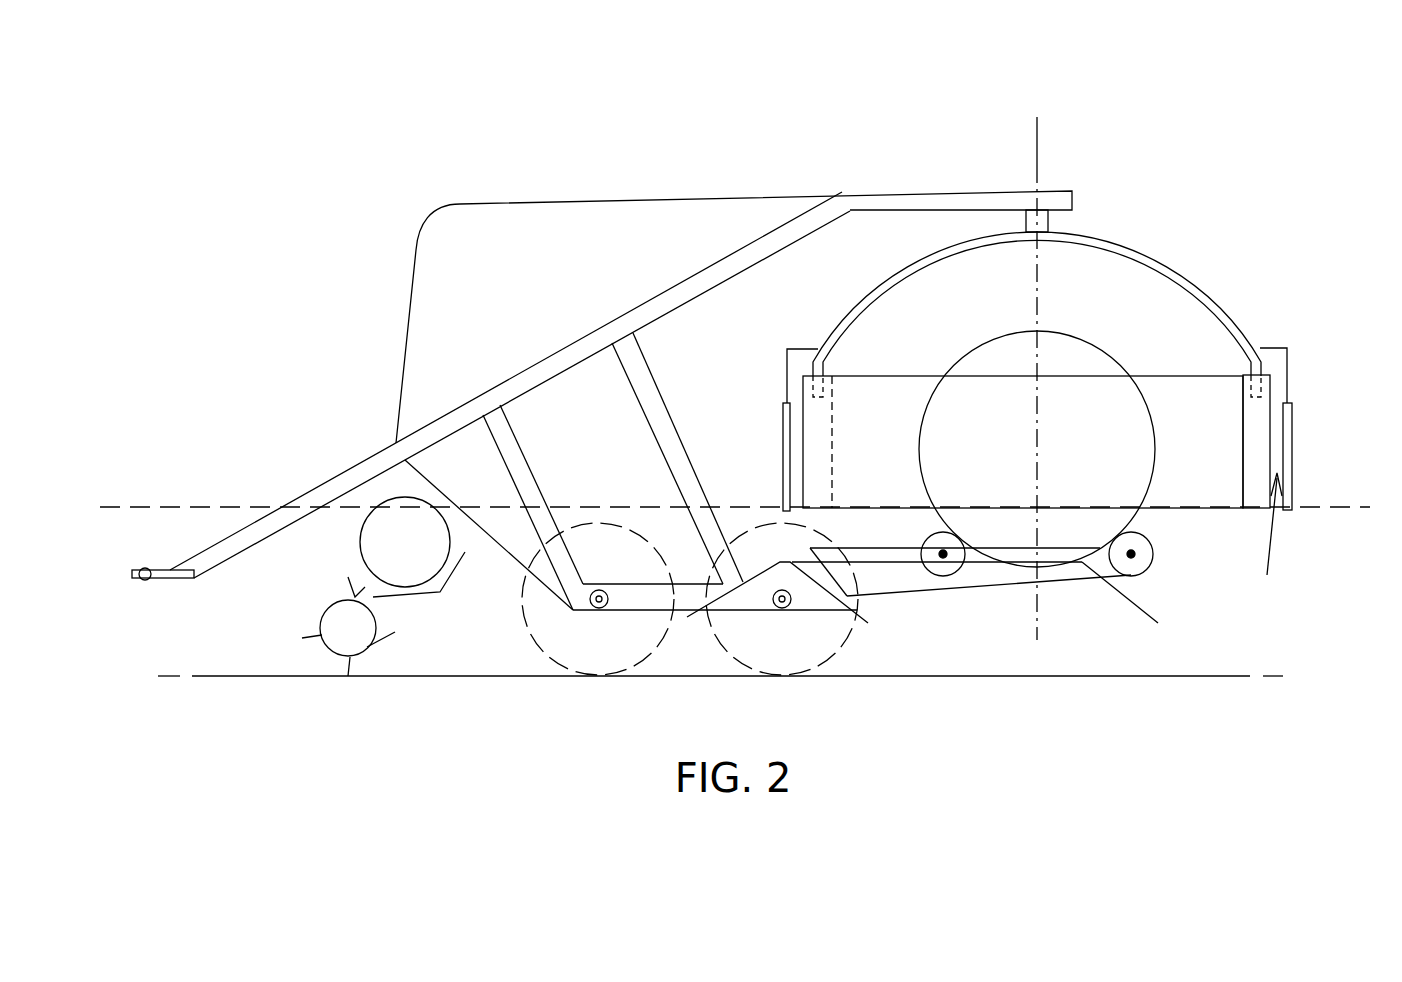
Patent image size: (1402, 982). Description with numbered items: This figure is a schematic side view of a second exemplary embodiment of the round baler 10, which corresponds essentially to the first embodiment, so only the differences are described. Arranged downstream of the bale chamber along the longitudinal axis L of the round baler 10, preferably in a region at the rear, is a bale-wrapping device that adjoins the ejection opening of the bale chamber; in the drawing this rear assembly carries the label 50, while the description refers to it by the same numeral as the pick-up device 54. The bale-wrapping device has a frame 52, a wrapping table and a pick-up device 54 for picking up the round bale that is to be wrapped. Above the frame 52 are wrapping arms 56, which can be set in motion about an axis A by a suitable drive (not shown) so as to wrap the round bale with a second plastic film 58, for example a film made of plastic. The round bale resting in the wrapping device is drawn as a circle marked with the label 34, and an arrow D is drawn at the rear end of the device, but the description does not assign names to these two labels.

The round baler 10 is at (565, 170).
The bale 34 is at (1097, 445).
The bale wrapping assembly 50 is at (1037, 325).
The frame 52 is at (940, 590).
The pick-up device 54 is at (1162, 538).
The wrapping arms 56 is at (883, 288).
The second plastic film 58 is at (1253, 465).
The axis A is at (1035, 147).
The longitudinal axis L is at (147, 503).
The direction D is at (1271, 538).